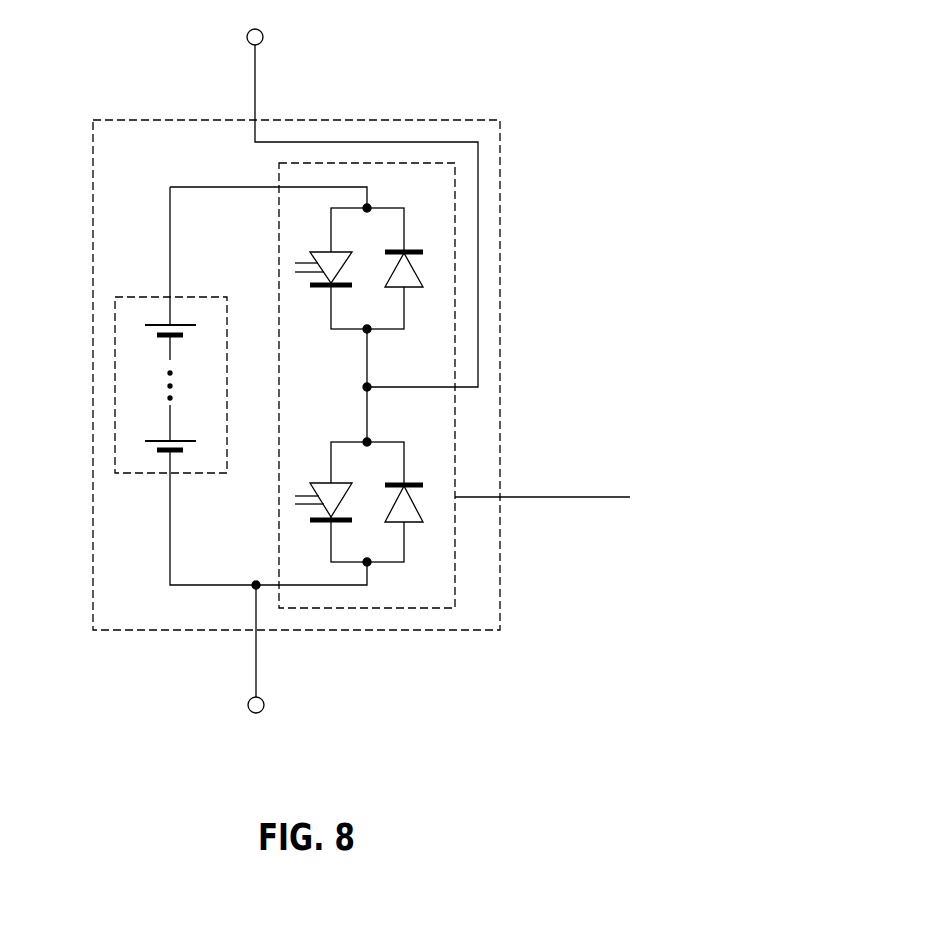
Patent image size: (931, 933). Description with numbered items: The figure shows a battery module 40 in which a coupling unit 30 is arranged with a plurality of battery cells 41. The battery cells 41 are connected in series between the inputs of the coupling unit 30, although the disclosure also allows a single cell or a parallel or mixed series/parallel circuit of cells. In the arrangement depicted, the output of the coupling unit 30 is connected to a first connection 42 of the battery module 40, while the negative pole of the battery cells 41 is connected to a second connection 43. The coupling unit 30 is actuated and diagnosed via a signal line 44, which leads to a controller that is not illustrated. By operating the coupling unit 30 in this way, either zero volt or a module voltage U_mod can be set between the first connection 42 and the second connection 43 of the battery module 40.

The battery module 40 is at (500, 188).
The coupling unit 30 is at (455, 232).
The battery cells 41 is at (115, 382).
The first connection 42 is at (264, 37).
The second connection 43 is at (265, 704).
The signal line 44 is at (555, 495).